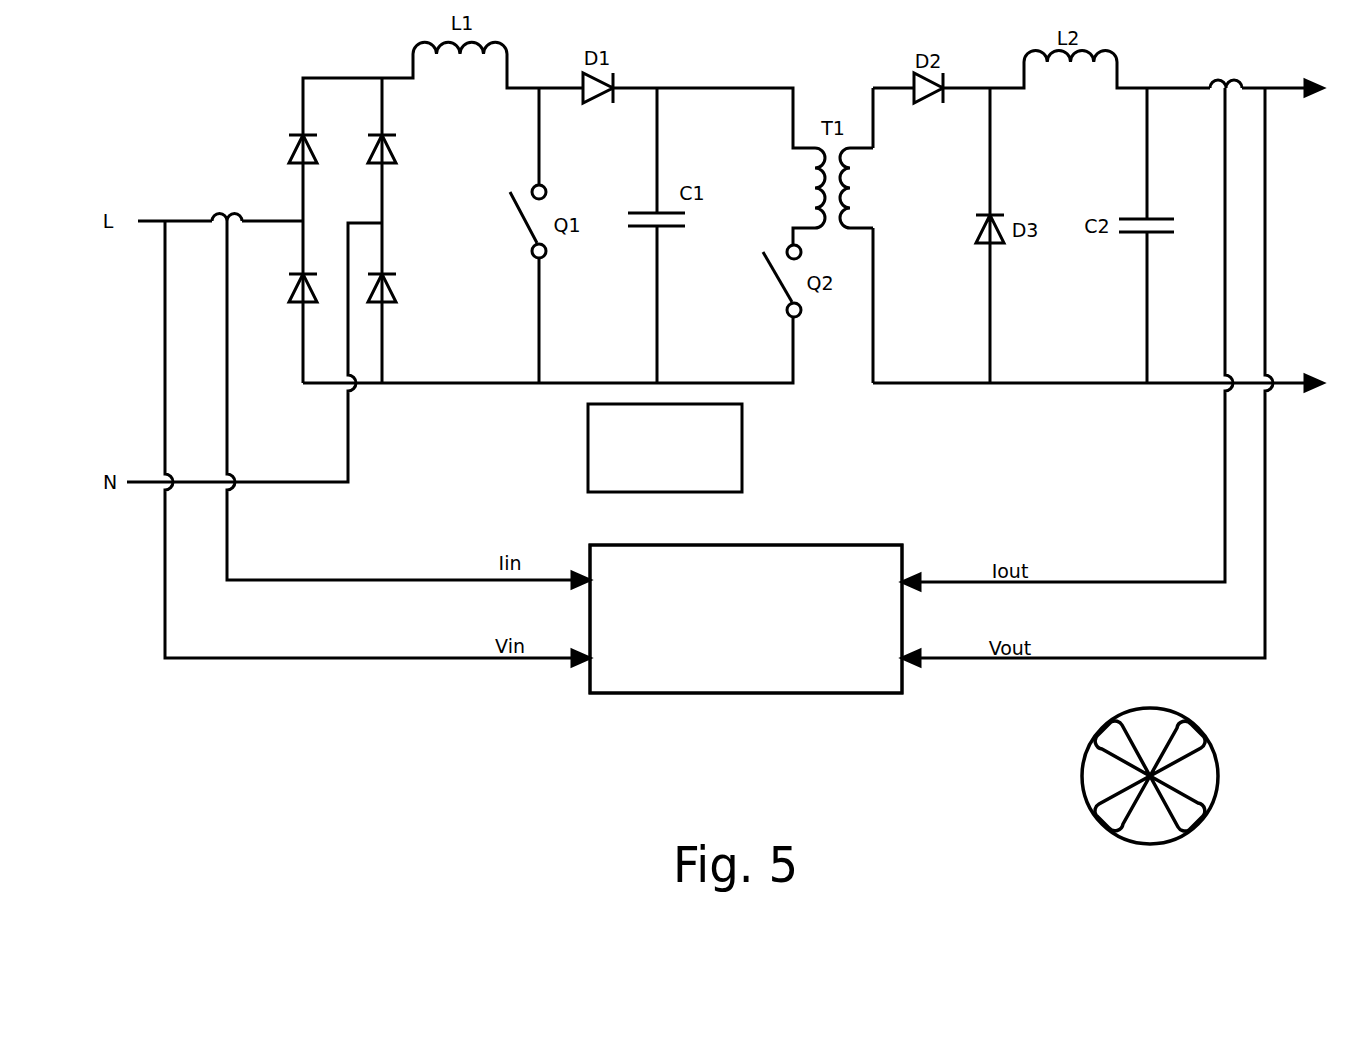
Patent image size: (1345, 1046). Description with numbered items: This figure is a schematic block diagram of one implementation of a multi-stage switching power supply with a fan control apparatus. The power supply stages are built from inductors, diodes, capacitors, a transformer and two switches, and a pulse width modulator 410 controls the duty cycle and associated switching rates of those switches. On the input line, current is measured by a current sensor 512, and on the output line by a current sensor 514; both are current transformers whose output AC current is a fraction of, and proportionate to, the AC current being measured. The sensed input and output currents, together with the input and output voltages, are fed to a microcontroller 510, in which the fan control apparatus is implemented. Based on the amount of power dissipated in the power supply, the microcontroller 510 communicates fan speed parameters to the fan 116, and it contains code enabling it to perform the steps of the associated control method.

The current sensor 512 is at (229, 192).
The current sensor 514 is at (1210, 58).
The pulse width modulator 410 is at (665, 448).
The microcontroller 510 is at (746, 619).
The fan 116 is at (1082, 770).